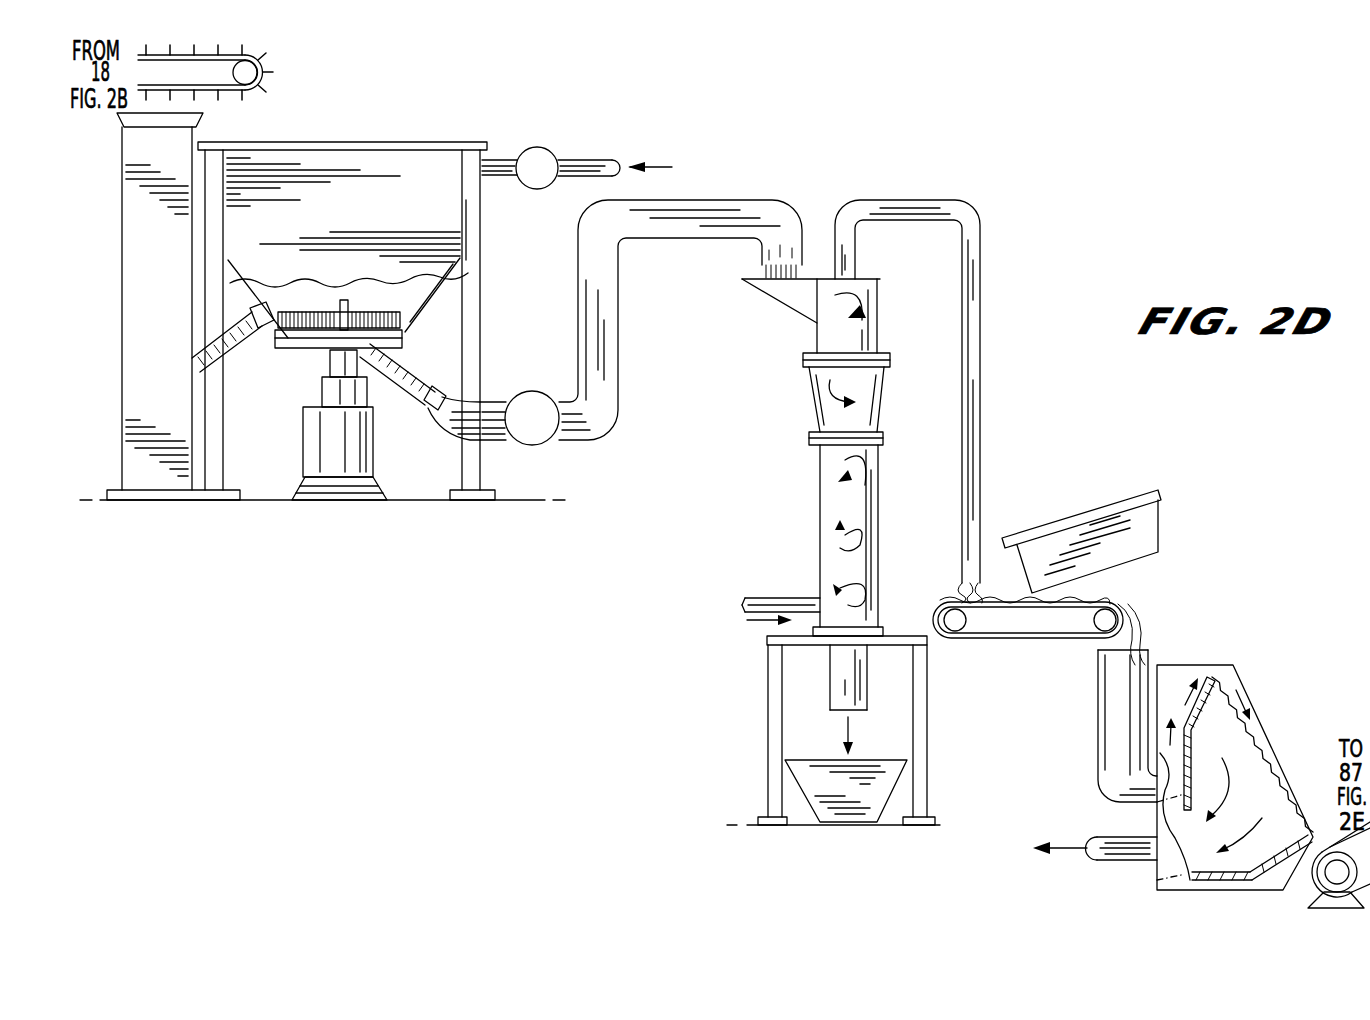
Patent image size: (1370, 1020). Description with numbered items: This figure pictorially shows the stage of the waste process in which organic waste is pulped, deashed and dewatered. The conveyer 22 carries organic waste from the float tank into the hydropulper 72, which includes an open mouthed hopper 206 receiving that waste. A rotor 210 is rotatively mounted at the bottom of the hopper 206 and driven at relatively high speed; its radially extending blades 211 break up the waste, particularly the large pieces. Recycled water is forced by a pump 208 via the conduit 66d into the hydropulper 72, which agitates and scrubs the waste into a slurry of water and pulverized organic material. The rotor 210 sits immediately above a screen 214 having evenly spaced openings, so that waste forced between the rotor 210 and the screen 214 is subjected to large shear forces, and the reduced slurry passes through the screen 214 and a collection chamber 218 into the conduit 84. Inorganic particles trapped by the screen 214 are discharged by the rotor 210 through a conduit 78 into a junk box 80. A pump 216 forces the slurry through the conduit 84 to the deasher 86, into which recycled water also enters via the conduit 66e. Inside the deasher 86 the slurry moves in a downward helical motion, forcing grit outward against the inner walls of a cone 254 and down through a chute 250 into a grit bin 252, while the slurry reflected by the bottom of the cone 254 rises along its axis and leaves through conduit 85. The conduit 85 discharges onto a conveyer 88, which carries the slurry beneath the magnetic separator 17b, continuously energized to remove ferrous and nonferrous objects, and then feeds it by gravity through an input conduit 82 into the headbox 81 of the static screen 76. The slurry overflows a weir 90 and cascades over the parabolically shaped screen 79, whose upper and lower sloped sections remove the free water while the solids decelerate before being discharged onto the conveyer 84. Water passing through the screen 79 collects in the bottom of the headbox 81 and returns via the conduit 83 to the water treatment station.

The conveyer 22 is at (262, 56).
The junk box 80 is at (135, 270).
The hydropulper 72 is at (398, 138).
The hopper 206 is at (473, 222).
The rotor 210 is at (290, 305).
The blades 211 is at (374, 322).
The screen 214 is at (448, 336).
The collection chamber 218 is at (307, 348).
The conduit 78 is at (240, 353).
The pump 208 is at (540, 148).
The conduit 66d is at (612, 160).
The pump 216 is at (538, 442).
The conduit 84 is at (598, 298).
The conduit 85 is at (968, 292).
The deasher 86 is at (808, 488).
The cone 254 is at (857, 415).
The conduit 66e is at (787, 598).
The chute 250 is at (840, 675).
The grit bin 252 is at (885, 782).
The magnetic separator 17b is at (1143, 488).
The conveyer 88 is at (990, 640).
The input conduit 82 is at (1115, 690).
The headbox 81 is at (1165, 708).
The static screen 76 is at (1262, 692).
The screen 79 is at (1258, 775).
The weir 90 is at (1234, 805).
The conduit 83 is at (1125, 850).